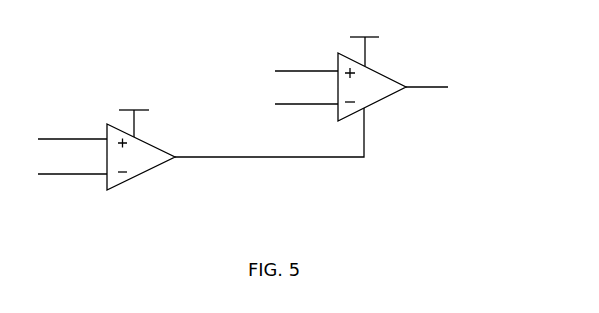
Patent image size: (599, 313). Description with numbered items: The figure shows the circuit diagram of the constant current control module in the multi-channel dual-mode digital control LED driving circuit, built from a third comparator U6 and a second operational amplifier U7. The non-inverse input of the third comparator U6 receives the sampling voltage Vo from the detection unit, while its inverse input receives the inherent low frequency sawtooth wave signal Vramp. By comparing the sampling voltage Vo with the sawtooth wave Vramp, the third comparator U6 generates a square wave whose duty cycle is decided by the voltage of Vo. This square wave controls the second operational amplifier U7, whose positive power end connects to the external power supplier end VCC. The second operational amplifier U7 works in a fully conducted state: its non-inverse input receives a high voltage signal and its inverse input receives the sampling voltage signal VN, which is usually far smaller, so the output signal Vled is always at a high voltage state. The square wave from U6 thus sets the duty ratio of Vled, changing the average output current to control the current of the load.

The third comparator U6 is at (141, 152).
The second operational amplifier U7 is at (372, 79).
The sampling voltage Vo is at (72, 130).
The inherent low frequency sawtooth wave signal Vramp is at (72, 165).
The external power supplier end VCC is at (249, 65).
The sampling voltage signal VN is at (306, 87).
The output signal Vled is at (429, 75).